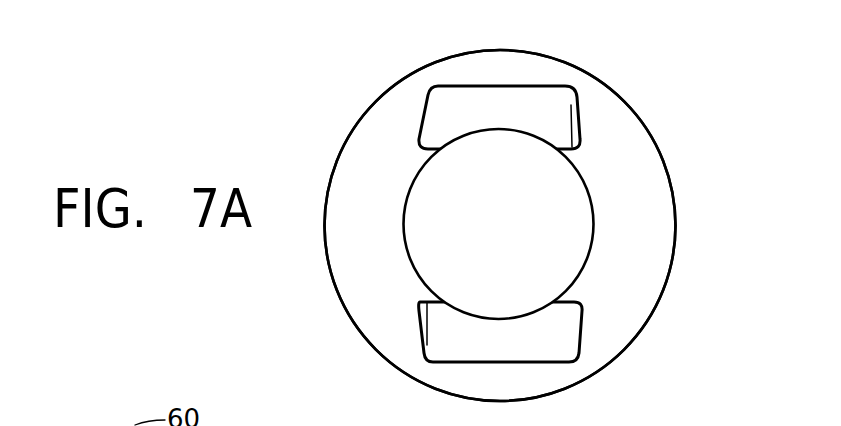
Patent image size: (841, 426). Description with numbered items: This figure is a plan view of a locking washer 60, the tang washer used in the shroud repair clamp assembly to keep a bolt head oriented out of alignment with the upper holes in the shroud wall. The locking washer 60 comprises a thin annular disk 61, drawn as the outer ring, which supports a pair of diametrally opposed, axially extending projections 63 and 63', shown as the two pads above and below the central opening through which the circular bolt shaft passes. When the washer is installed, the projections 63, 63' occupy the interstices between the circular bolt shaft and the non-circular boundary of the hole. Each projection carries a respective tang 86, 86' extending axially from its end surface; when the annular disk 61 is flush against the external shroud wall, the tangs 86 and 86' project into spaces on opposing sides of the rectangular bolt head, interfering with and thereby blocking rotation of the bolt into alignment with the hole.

The locking washer 60 is at (323, 104).
The annular disk 61 is at (630, 340).
The projection 63 is at (480, 84).
The projection 63' is at (537, 364).
The tang 86 is at (615, 97).
The tang 86' is at (377, 347).